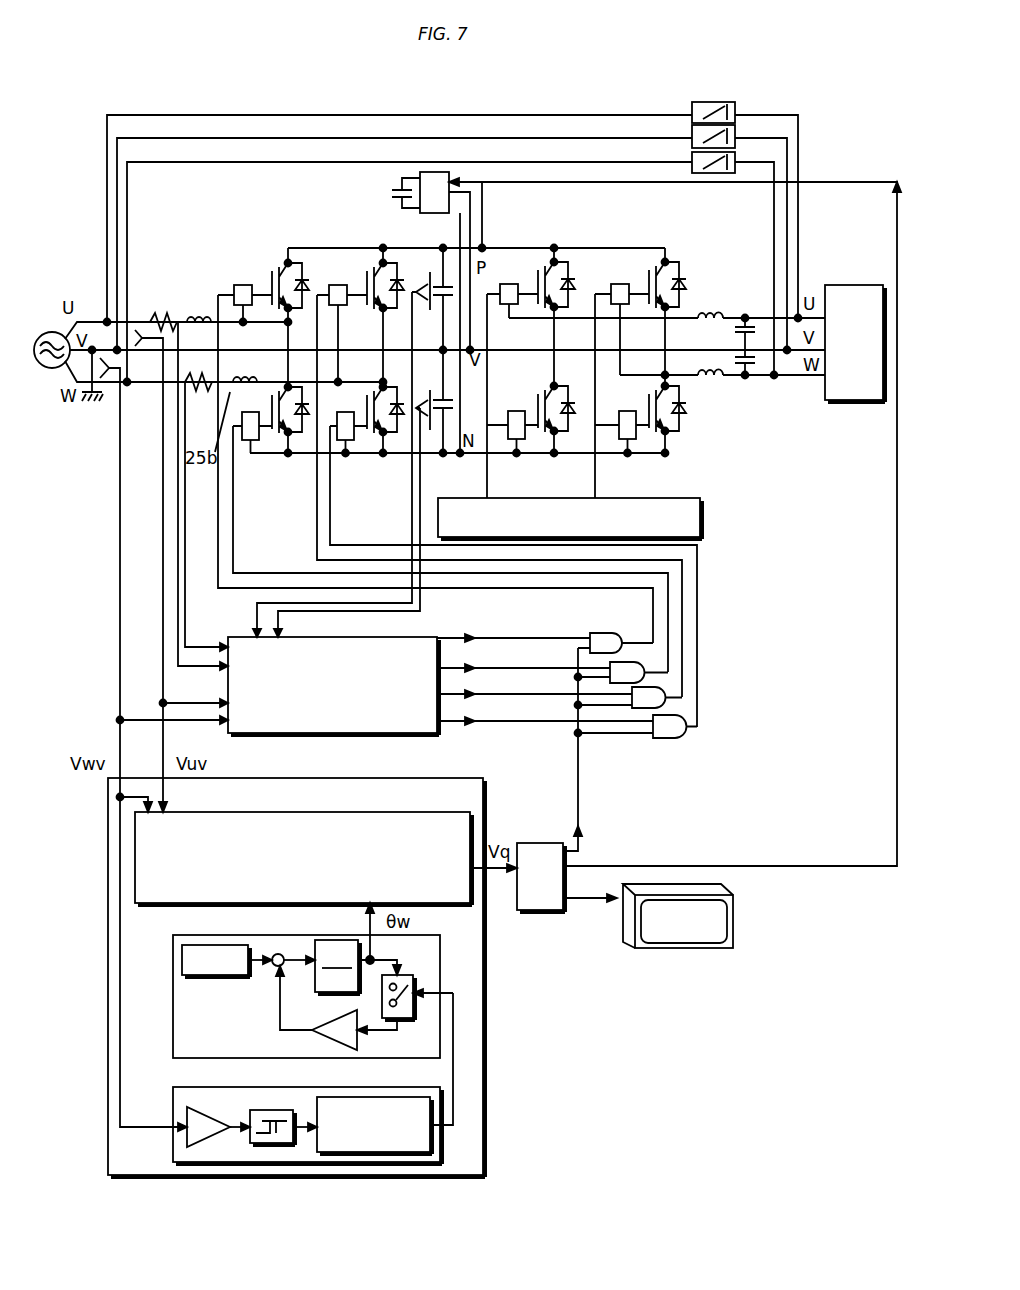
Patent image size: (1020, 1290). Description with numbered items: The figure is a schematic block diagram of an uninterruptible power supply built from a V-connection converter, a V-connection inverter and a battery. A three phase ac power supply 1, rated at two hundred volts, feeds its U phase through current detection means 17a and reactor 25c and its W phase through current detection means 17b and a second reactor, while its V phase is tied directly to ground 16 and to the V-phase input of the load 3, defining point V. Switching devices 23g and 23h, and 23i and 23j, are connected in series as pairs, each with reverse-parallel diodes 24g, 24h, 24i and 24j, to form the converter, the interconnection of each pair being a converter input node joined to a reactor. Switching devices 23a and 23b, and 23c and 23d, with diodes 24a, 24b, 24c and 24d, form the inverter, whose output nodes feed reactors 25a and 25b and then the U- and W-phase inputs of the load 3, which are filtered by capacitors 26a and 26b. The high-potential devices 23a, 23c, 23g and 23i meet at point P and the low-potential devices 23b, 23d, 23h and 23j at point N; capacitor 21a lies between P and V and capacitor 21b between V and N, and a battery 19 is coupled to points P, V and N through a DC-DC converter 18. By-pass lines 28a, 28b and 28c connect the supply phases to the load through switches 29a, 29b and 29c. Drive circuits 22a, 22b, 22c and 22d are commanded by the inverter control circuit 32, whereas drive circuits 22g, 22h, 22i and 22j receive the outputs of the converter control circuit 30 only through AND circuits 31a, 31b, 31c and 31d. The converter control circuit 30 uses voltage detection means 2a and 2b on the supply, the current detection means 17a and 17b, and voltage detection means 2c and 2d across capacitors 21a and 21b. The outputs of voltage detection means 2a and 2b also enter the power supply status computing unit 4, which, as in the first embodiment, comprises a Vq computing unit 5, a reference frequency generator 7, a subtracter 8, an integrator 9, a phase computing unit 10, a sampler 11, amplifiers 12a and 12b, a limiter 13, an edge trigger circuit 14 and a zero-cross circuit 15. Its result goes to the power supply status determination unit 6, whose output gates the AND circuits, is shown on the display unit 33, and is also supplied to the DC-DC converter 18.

The three phase ac power supply 1 is at (46, 372).
The voltage detection means 2a is at (141, 328).
The voltage detection means 2b is at (110, 382).
The voltage detection means 2c is at (424, 306).
The voltage detection means 2d is at (428, 443).
The load 3 is at (840, 285).
The power supply status computing unit 4 is at (488, 1024).
The Vq computing unit 5 is at (418, 812).
The power supply status determination unit 6 is at (530, 843).
The reference frequency generator 7 is at (220, 945).
The subtracter 8 is at (272, 952).
The integrator 9 is at (325, 940).
The phase computing unit 10 is at (441, 962).
The sampler 11 is at (414, 992).
The amplifier 12a is at (325, 1050).
The amplifier 12b is at (200, 1106).
The limiter 13 is at (266, 1110).
The edge trigger circuit 14 is at (405, 1097).
The zero-cross circuit 15 is at (441, 1152).
The ground 16 is at (87, 404).
The current detection means 17a is at (160, 318).
The current detection means 17b is at (205, 392).
The DC-DC converter 18 is at (434, 172).
The battery 19 is at (398, 188).
The capacitor 21a is at (441, 282).
The capacitor 21b is at (446, 440).
The drive circuit 22a is at (509, 284).
The drive circuit 22b is at (517, 440).
The drive circuit 22c is at (620, 284).
The drive circuit 22d is at (628, 440).
The drive circuit 22g is at (243, 285).
The drive circuit 22h is at (251, 441).
The drive circuit 22i is at (338, 285).
The drive circuit 22j is at (346, 441).
The switching device 23a is at (535, 248).
The switching device 23b is at (553, 434).
The switching device 23c is at (655, 260).
The switching device 23d is at (677, 435).
The switching device 23g is at (264, 257).
The switching device 23h is at (278, 449).
The switching device 23i is at (361, 257).
The switching device 23j is at (369, 456).
The diode 24a is at (577, 248).
The diode 24b is at (571, 443).
The diode 24c is at (698, 273).
The diode 24d is at (698, 422).
The diode 24g is at (301, 265).
The diode 24h is at (290, 463).
The diode 24i is at (391, 265).
The diode 24j is at (388, 468).
The reactor 25a is at (712, 312).
The reactor 25b is at (716, 386).
The reactor 25c is at (198, 312).
The capacitor 26a is at (747, 322).
The capacitor 26b is at (760, 374).
The by-pass line 28a is at (230, 114).
The by-pass line 28b is at (270, 137).
The by-pass line 28c is at (325, 161).
The switch 29a is at (718, 102).
The switch 29b is at (742, 134).
The switch 29c is at (733, 174).
The converter control circuit 30 is at (340, 740).
The AND circuit 31a is at (596, 632).
The AND circuit 31b is at (626, 661).
The AND circuit 31c is at (645, 709).
The AND circuit 31d is at (676, 740).
The inverter control circuit 32 is at (701, 512).
The display unit 33 is at (672, 950).